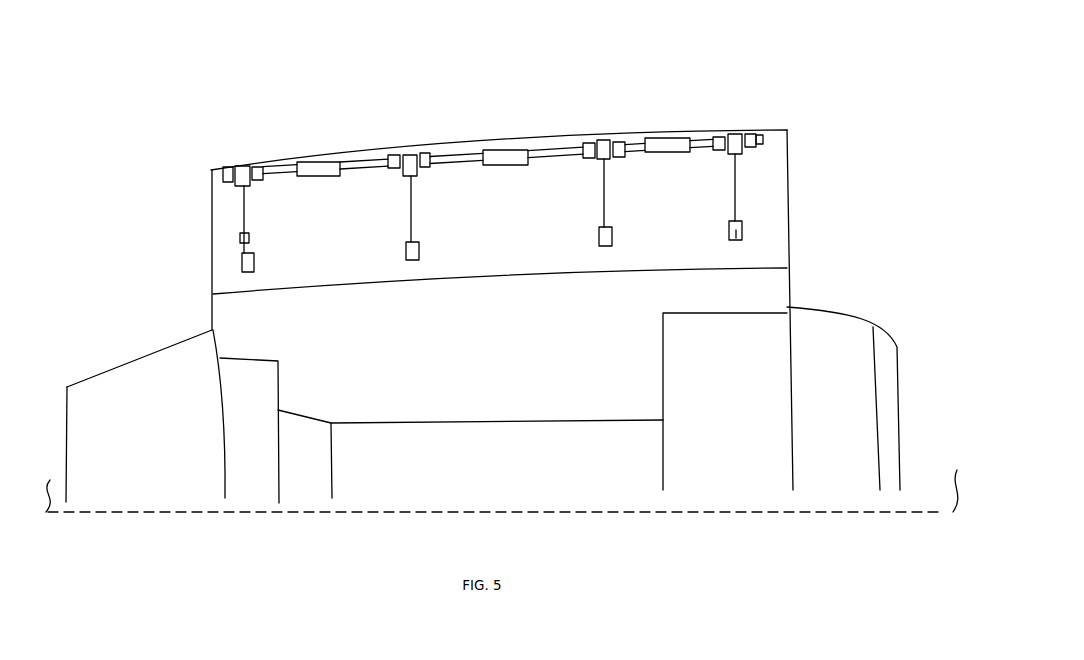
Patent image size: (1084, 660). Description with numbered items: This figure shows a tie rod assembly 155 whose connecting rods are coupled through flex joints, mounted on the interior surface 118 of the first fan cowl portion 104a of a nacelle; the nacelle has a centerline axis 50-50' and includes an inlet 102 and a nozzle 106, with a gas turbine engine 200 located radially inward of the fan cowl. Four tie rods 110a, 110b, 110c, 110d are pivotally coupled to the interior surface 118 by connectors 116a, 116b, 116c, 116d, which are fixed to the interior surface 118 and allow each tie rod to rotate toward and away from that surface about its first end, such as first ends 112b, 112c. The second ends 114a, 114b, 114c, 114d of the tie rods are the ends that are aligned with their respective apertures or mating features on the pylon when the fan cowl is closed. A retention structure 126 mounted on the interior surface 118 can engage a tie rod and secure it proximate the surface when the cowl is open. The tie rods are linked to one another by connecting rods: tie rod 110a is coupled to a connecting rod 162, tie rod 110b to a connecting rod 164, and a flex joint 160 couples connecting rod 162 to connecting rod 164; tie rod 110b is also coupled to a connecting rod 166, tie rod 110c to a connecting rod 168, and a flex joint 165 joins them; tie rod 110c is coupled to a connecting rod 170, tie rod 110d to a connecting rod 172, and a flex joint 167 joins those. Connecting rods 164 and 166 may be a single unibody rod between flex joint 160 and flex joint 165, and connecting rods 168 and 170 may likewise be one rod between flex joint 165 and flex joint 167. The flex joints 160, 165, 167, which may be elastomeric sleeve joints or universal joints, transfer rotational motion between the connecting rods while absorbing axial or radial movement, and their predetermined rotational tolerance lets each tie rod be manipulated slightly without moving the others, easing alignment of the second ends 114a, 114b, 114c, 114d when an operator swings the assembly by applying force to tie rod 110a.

The centerline axis 50 is at (507, 481).
The centerline axis 50' is at (52, 483).
The inlet 102 is at (850, 330).
The first fan cowl portion 104a is at (520, 137).
The nozzle 106 is at (137, 385).
The tie rod 110a is at (244, 203).
The tie rod 110b is at (411, 226).
The tie rod 110c is at (604, 213).
The tie rod 110d is at (735, 200).
The first end of tie rod 112b is at (410, 156).
The first end of tie rod 112c is at (603, 158).
The second end of tie rod 114a is at (250, 272).
The second end of tie rod 114b is at (412, 260).
The second end of tie rod 114c is at (605, 246).
The second end of tie rod 114d is at (735, 240).
The connector 116a is at (229, 167).
The connector 116b is at (392, 168).
The connector 116c is at (621, 158).
The connector 116d is at (754, 148).
The interior surface 118 is at (482, 220).
The retention structure 126 is at (250, 238).
The tie rod assembly 155 is at (207, 166).
The flex joint 160 is at (315, 164).
The connecting rod 162 is at (283, 172).
The connecting rod 164 is at (380, 160).
The flex joint 165 is at (498, 158).
The connecting rod 166 is at (465, 158).
The flex joint 167 is at (657, 147).
The connecting rod 168 is at (563, 155).
The connecting rod 170 is at (641, 150).
The connecting rod 172 is at (700, 142).
The gas turbine engine 200 is at (537, 477).